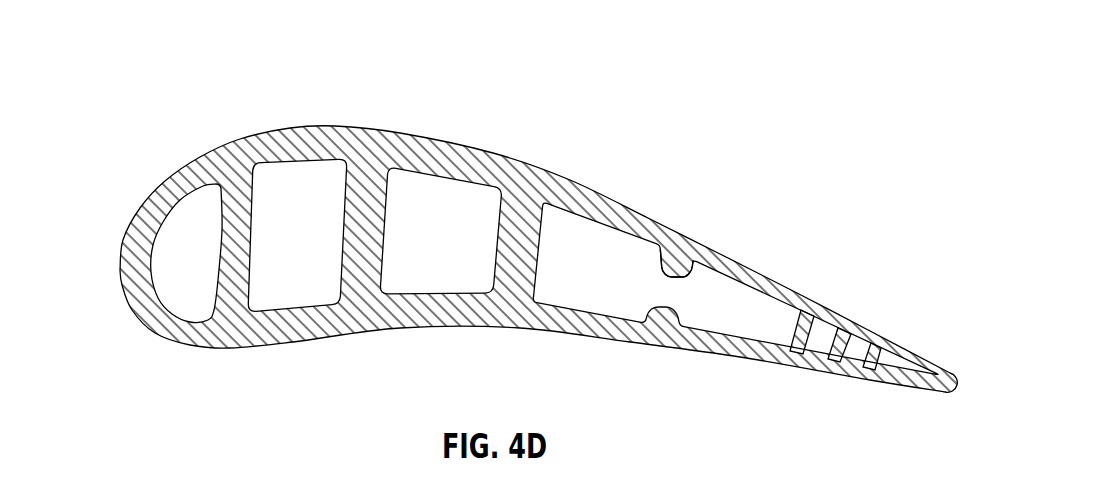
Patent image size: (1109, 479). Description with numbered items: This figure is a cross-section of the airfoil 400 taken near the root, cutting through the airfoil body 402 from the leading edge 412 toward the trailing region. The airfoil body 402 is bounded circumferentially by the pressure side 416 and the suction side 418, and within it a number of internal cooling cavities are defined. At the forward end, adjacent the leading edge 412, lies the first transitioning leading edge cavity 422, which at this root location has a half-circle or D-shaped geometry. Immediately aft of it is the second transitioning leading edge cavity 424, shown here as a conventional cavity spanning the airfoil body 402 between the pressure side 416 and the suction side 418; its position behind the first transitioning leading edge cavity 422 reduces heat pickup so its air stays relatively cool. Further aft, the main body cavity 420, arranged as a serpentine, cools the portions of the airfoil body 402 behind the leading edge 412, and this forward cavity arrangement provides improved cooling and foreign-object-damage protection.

The airfoil 400 is at (513, 223).
The airfoil body 402 is at (685, 246).
The leading edge 412 is at (120, 260).
The pressure side 416 is at (295, 342).
The suction side 418 is at (385, 130).
The main body cavity 420 is at (439, 200).
The first transitioning leading edge cavity 422 is at (191, 226).
The second transitioning leading edge cavity 424 is at (299, 181).